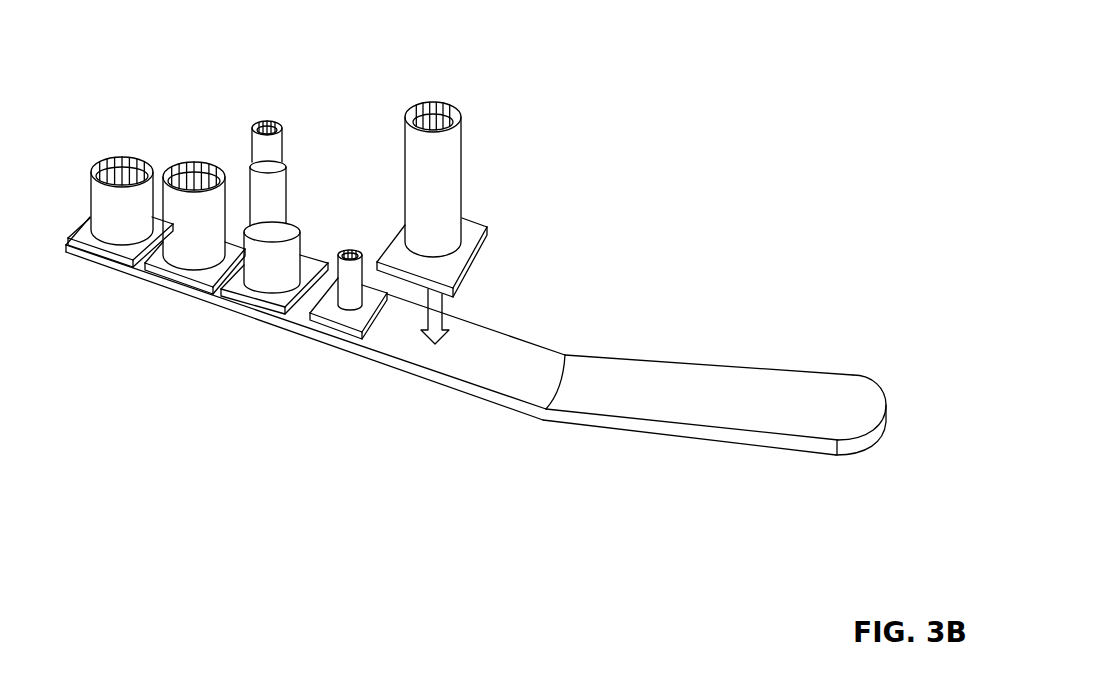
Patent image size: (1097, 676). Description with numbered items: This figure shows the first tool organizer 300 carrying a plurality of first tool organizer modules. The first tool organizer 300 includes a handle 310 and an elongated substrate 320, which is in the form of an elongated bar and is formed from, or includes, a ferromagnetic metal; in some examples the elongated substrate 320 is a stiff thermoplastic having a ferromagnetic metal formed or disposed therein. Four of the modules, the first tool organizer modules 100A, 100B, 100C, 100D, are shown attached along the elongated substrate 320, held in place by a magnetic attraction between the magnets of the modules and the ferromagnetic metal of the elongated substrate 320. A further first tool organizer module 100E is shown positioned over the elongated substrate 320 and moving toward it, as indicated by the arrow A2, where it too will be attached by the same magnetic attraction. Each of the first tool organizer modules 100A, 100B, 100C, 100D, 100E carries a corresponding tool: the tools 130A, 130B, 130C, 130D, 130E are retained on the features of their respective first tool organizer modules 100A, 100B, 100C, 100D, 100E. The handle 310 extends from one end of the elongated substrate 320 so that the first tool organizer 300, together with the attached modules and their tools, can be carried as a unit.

The first tool organizer module 100A is at (108, 247).
The first tool organizer module 100B is at (187, 273).
The first tool organizer module 100C is at (273, 300).
The first tool organizer module 100D is at (352, 317).
The first tool organizer module 100E is at (480, 228).
The tool 130A is at (121, 171).
The tool 130B is at (192, 165).
The tool 130C is at (273, 147).
The tool 130D is at (354, 251).
The tool 130E is at (448, 167).
The first tool organizer 300 is at (476, 314).
The handle 310 is at (743, 390).
The elongated substrate 320 is at (483, 370).
The arrow A2 is at (460, 312).